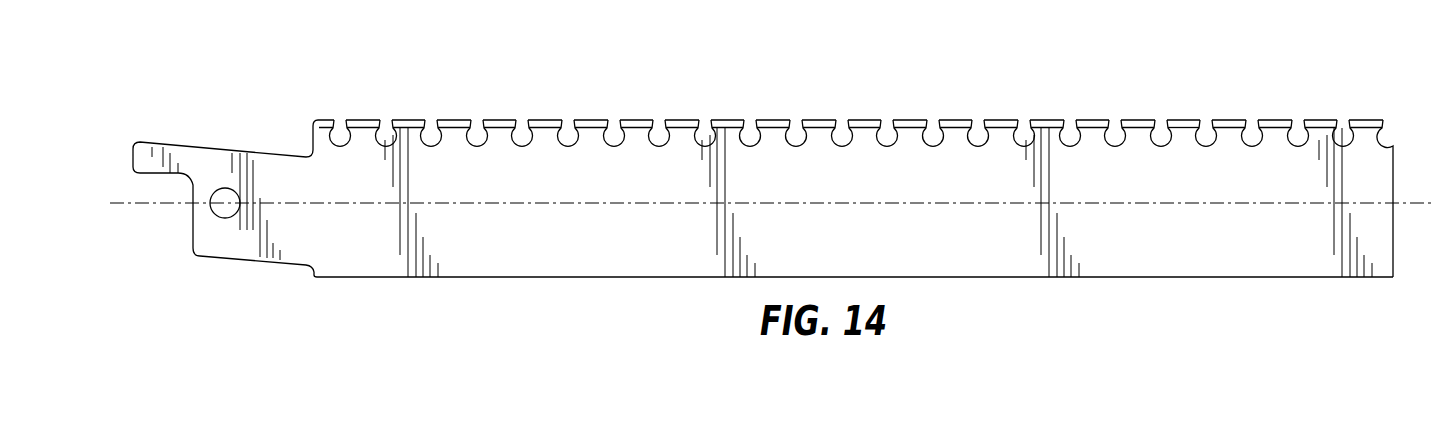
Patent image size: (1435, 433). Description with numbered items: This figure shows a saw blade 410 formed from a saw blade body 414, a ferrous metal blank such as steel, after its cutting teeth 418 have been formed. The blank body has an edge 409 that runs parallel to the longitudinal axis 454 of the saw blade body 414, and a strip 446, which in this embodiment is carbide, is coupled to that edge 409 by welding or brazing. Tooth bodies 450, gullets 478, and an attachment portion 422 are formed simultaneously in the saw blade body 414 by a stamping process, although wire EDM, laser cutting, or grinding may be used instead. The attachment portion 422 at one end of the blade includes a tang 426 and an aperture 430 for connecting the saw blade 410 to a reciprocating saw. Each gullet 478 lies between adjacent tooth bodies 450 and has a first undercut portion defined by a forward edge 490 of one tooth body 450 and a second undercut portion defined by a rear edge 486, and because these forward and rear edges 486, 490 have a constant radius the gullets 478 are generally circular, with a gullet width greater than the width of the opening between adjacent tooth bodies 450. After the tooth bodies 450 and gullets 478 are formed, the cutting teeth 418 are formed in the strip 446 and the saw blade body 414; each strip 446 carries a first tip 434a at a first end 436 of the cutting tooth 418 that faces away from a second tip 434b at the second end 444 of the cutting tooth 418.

The edge 409 is at (1367, 128).
The saw blade 410 is at (772, 165).
The saw blade body 414 is at (1148, 257).
The cutting teeth 418 is at (408, 105).
The attachment portion 422 is at (243, 118).
The tang 426 is at (178, 148).
The aperture 430 is at (220, 217).
The first tip 434a is at (758, 118).
The second tip 434b is at (790, 118).
The first end 436 is at (943, 108).
The second end 444 is at (967, 108).
The strip 446 is at (497, 122).
The tooth bodies 450 is at (457, 127).
The longitudinal axis 454 is at (1180, 200).
The gullets 478 is at (1020, 140).
The rear edge 486 is at (1190, 128).
The forward edge 490 is at (1183, 128).